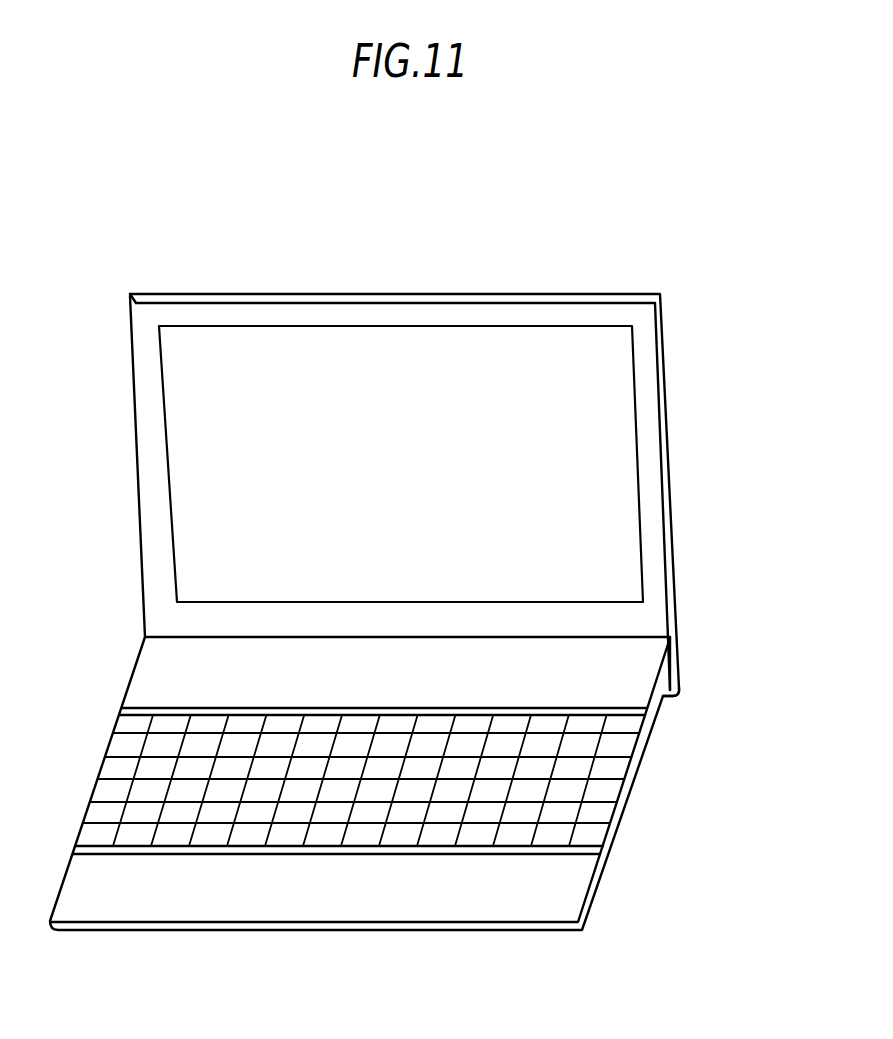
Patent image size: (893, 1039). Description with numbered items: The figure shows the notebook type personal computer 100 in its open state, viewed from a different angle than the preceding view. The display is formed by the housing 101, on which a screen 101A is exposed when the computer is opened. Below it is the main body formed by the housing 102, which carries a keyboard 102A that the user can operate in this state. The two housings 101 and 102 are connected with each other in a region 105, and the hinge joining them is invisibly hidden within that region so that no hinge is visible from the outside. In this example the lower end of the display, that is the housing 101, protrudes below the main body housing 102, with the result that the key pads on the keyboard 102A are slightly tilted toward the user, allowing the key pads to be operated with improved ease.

The notebook type personal computer 100 is at (595, 923).
The housing 101 is at (413, 292).
The screen 101A is at (637, 435).
The housing 102 is at (595, 900).
The keyboard 102A is at (612, 772).
The region 105 is at (683, 612).